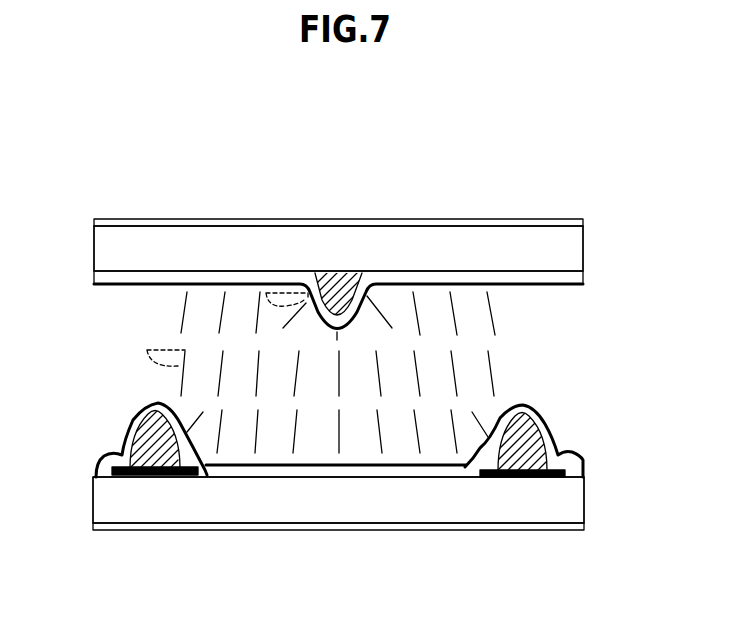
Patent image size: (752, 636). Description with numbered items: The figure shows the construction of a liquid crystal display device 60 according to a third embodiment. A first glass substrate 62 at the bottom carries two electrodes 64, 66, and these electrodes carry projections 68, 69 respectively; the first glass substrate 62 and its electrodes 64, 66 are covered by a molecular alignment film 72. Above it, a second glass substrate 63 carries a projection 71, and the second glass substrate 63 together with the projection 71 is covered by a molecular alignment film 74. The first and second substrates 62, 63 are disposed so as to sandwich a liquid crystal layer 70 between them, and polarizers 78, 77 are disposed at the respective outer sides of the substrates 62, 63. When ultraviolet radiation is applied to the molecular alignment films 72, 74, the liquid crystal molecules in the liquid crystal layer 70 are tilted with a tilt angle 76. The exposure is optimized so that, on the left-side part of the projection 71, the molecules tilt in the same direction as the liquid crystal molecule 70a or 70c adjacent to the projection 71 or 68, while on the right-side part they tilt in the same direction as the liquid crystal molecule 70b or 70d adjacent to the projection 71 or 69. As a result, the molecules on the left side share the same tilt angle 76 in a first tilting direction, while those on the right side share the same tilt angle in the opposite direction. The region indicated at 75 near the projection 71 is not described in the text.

The liquid crystal display device 60 is at (64, 144).
The first glass substrate 62 is at (508, 512).
The second glass substrate 63 is at (420, 243).
The electrode 64 is at (117, 452).
The electrode 66 is at (563, 453).
The projection 68 is at (152, 411).
The projection 69 is at (527, 415).
The liquid crystal layer 70 is at (520, 315).
The liquid crystal molecule 70a is at (290, 318).
The liquid crystal molecule 70b is at (370, 307).
The liquid crystal molecule 70c is at (206, 467).
The liquid crystal molecule 70d is at (468, 465).
The projection 71 is at (344, 272).
The molecular alignment film 72 is at (268, 470).
The molecular alignment film 74 is at (200, 280).
The dashed region 75 is at (264, 294).
The tilt angle 76 is at (147, 350).
The polarizer 77 is at (491, 224).
The polarizer 78 is at (552, 528).